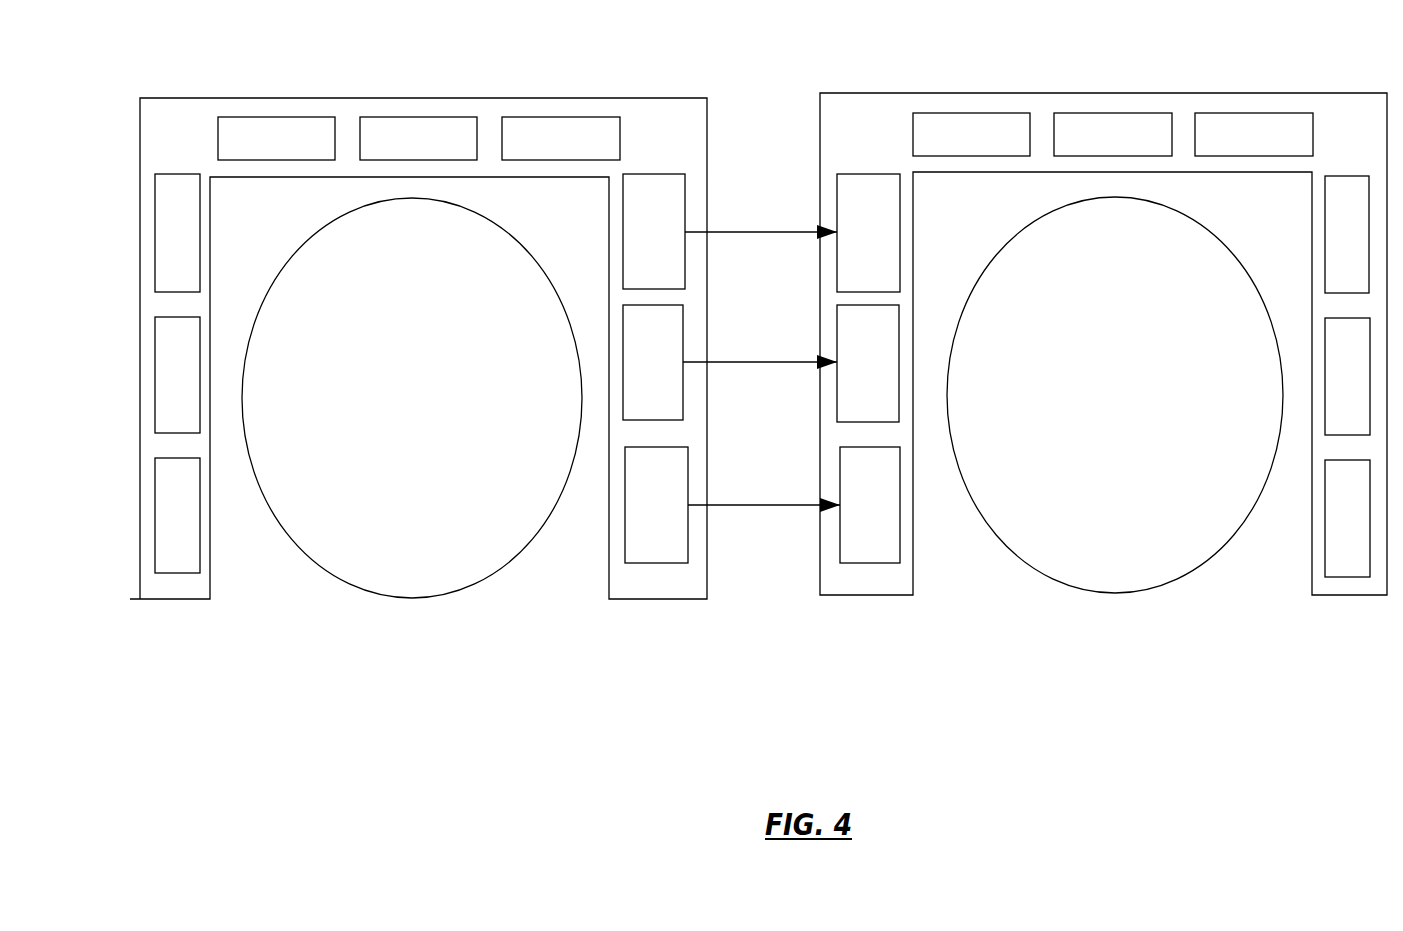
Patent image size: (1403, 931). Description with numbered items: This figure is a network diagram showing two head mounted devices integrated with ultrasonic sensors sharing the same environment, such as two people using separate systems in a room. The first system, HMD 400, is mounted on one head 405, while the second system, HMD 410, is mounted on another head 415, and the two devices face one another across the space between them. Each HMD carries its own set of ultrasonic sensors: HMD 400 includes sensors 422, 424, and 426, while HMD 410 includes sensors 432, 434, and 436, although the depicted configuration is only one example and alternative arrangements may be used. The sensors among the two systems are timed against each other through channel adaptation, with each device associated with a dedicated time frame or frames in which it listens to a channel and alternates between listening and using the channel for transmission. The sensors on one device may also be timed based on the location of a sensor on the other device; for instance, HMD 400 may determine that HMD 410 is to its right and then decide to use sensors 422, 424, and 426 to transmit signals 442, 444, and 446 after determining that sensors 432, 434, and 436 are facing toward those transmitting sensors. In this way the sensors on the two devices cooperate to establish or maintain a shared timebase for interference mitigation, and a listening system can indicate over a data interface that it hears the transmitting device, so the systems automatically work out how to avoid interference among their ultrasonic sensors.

The HMD 400 is at (538, 98).
The head 405 is at (390, 424).
The HMD 410 is at (1195, 93).
The head 415 is at (1094, 419).
The sensor 422 is at (633, 258).
The sensor 424 is at (632, 389).
The sensor 426 is at (635, 529).
The sensor 432 is at (847, 258).
The sensor 434 is at (847, 389).
The sensor 436 is at (849, 529).
The signal 442 is at (733, 232).
The signal 444 is at (737, 362).
The signal 446 is at (725, 505).